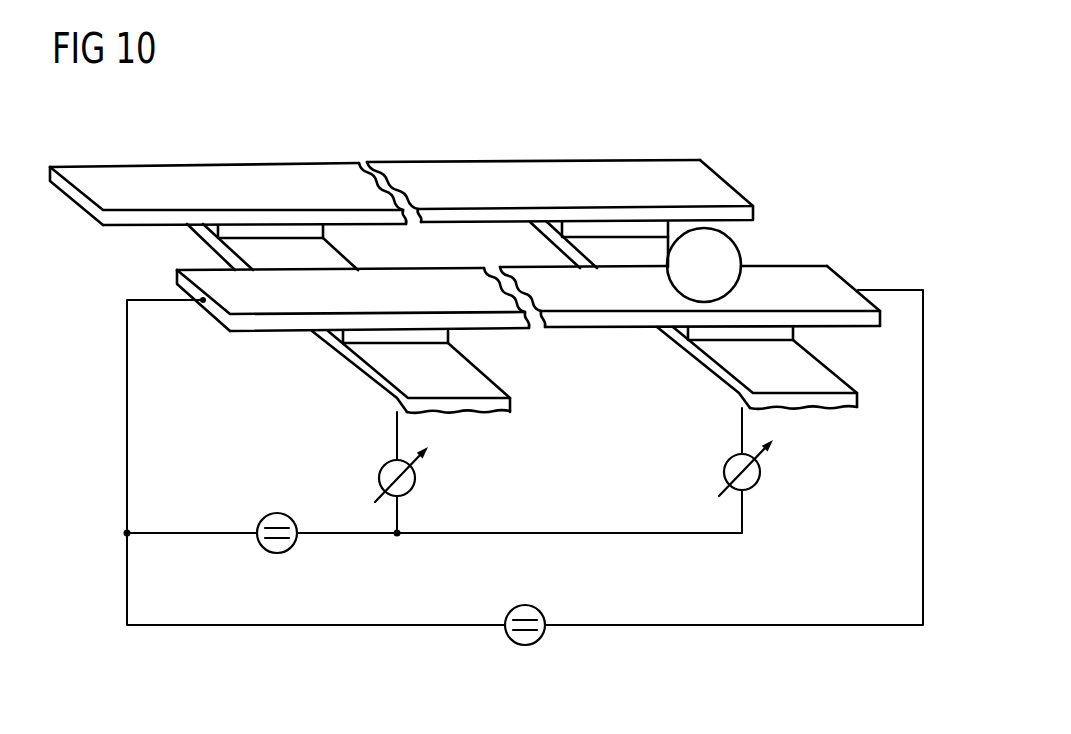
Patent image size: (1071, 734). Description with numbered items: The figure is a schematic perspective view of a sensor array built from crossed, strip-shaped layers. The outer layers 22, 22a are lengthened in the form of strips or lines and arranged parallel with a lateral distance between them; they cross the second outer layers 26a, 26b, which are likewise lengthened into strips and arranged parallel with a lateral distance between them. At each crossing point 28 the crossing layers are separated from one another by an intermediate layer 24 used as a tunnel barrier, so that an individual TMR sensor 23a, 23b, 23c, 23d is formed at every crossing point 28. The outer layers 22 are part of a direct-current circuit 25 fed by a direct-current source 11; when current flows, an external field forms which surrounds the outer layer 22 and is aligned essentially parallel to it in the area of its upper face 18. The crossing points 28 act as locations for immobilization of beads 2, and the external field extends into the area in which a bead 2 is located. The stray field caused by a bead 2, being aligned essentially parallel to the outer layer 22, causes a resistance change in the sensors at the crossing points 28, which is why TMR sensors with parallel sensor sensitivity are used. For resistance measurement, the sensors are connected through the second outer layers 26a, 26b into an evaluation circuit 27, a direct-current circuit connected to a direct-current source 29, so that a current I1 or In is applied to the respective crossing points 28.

The bead 2 is at (733, 255).
The direct-current source 11 is at (525, 646).
The upper face 18 is at (797, 272).
The outer layer 22 is at (203, 178).
The outer layer 22a is at (840, 278).
The TMR sensor 23a is at (549, 242).
The TMR sensor 23b is at (267, 288).
The TMR sensor 23c is at (243, 170).
The TMR sensor 23d is at (588, 170).
The intermediate layer 24 is at (314, 229).
The direct-current circuit 25 is at (676, 627).
The second outer layer 26a is at (388, 366).
The second outer layer 26b is at (733, 362).
The evaluation circuit 27 is at (341, 536).
The crossing point 28 is at (658, 170).
The direct-current source 29 is at (277, 554).
The current I1 is at (417, 478).
The current In is at (760, 472).